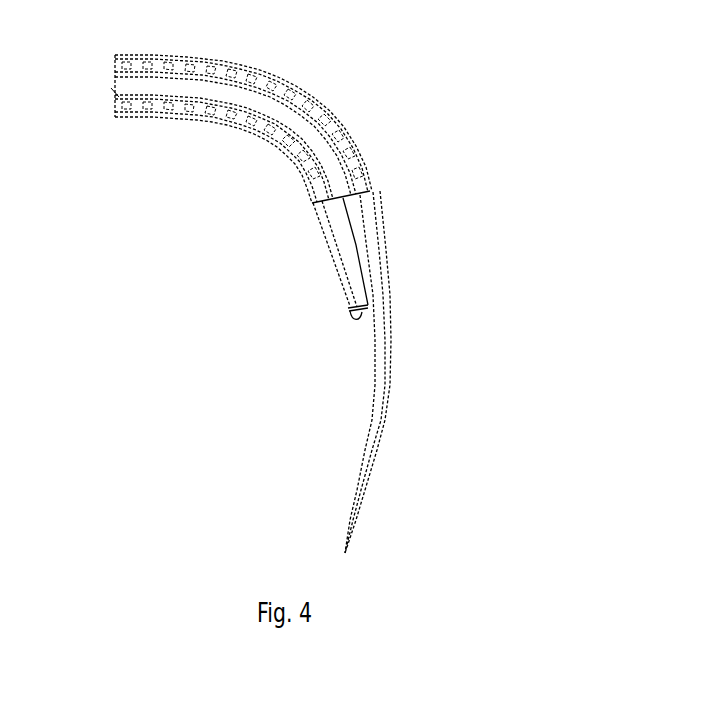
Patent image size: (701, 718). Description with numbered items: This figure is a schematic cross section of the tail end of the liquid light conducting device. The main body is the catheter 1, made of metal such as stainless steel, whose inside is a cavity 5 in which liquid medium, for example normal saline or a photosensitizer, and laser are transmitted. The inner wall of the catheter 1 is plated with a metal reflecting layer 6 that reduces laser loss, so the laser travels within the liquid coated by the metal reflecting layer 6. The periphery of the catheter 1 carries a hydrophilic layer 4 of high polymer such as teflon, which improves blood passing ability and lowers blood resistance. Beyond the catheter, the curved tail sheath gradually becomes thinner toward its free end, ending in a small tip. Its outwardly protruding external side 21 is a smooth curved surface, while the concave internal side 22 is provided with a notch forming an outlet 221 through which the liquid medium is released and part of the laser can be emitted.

The catheter 1 is at (224, 149).
The hydrophilic layer 4 is at (221, 143).
The cavity 5 is at (94, 105).
The metal reflecting layer 6 is at (243, 100).
The external side 21 is at (415, 372).
The internal side 22 is at (294, 251).
The outlet 221 is at (315, 362).